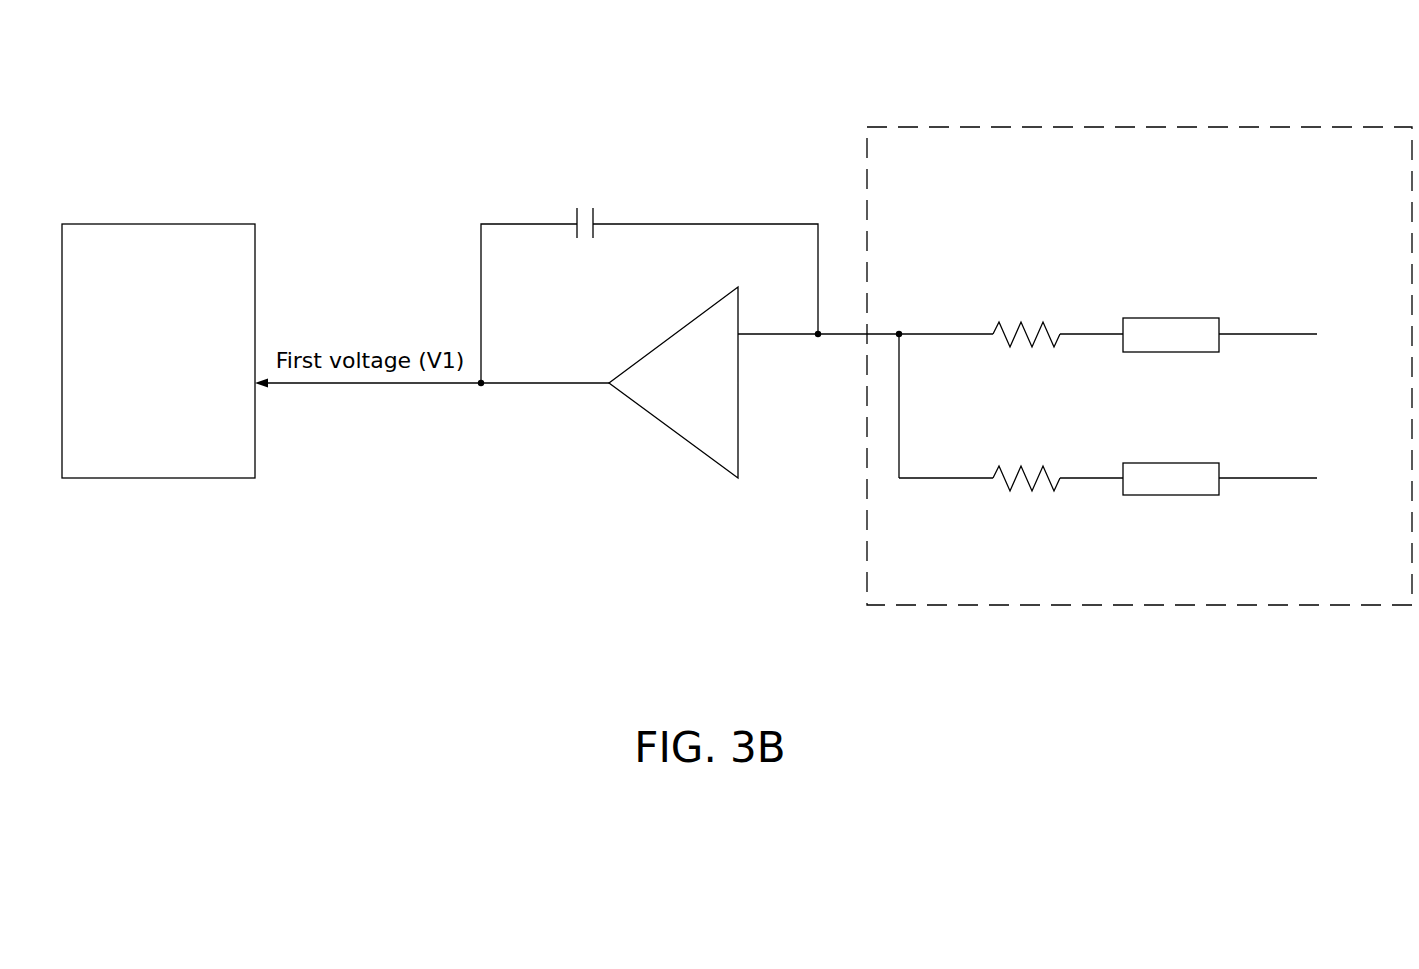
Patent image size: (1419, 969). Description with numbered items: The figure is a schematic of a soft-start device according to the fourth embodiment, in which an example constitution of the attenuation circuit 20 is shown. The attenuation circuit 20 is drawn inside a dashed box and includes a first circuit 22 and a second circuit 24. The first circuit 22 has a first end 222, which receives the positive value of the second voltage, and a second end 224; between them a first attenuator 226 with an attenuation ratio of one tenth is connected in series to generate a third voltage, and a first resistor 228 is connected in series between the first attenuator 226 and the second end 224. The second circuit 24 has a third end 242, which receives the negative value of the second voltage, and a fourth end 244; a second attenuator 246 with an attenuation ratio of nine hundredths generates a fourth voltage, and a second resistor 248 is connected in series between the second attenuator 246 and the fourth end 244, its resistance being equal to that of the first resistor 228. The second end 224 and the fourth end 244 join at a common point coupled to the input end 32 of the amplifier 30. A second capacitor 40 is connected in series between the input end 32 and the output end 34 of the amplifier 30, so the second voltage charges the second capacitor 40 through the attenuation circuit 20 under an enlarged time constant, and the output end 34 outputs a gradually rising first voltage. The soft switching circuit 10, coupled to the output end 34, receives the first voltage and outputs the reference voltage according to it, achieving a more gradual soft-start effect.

The soft switching circuit 10 is at (175, 419).
The attenuation circuit 20 is at (1381, 126).
The first circuit 22 is at (1141, 274).
The second circuit 24 is at (1142, 489).
The amplifier 30 is at (699, 396).
The input end 32 is at (739, 333).
The output end 34 is at (608, 381).
The second capacitor 40 is at (576, 208).
The first end 222 is at (1313, 334).
The second end 224 is at (937, 334).
The first attenuator 226 is at (1173, 318).
The first resistor 228 is at (1044, 322).
The third end 242 is at (1313, 478).
The fourth end 244 is at (937, 478).
The second attenuator 246 is at (1173, 463).
The second resistor 248 is at (1044, 466).